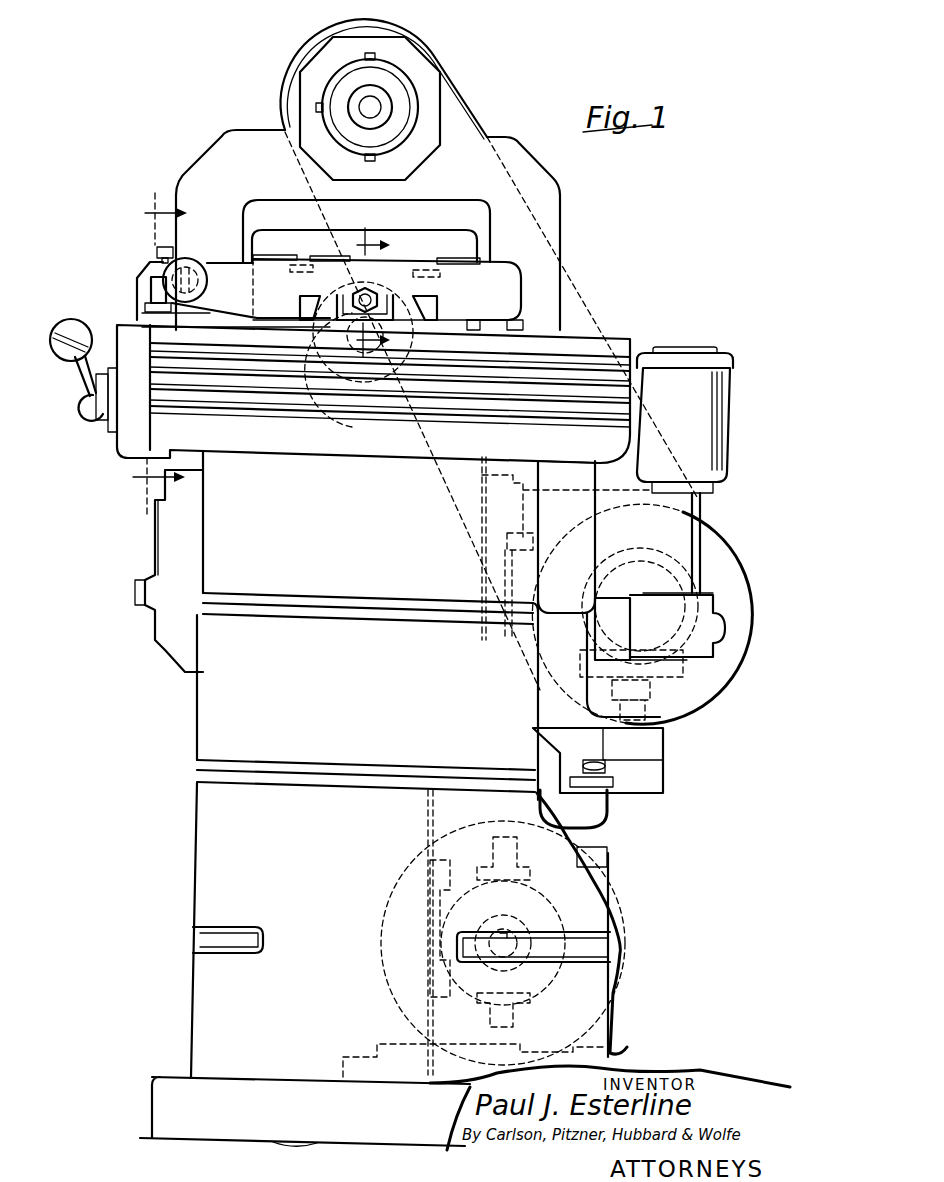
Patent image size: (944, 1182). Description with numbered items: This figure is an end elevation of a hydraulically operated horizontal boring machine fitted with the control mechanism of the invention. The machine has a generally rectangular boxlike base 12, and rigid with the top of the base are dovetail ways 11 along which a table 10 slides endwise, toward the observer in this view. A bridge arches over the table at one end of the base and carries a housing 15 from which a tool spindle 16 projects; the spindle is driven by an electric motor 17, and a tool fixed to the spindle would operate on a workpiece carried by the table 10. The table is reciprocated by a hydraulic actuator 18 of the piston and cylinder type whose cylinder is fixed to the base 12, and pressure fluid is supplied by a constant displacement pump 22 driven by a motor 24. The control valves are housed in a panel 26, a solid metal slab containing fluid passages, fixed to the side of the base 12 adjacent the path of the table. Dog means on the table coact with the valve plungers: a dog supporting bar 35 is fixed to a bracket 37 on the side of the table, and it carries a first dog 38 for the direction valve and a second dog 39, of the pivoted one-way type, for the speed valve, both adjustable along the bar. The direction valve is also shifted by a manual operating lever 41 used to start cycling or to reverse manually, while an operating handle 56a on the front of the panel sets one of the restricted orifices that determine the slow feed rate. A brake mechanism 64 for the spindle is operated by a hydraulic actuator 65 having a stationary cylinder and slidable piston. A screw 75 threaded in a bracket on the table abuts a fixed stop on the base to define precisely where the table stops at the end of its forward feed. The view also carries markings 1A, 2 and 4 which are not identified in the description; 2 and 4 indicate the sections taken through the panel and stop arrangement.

The head housing 1A is at (560, 195).
The section line of FIG. 2 is at (149, 354).
The section line of FIG. 4 is at (383, 292).
The table 10 is at (507, 273).
The dovetail ways 11 is at (299, 299).
The base 12 is at (203, 844).
The housing 15 is at (440, 82).
The tool spindle 16 is at (385, 82).
The electric motor 17 is at (735, 566).
The hydraulic actuator 18 is at (318, 368).
The constant displacement pump 22 is at (553, 977).
The motor 24 is at (620, 918).
The panel 26 is at (121, 330).
The dog supporting bar 35 is at (201, 277).
The bracket 37 is at (188, 259).
The first dog 38 is at (152, 301).
The second dog 39 is at (150, 292).
The manual operating lever 41 is at (71, 322).
The operating handle 56a is at (89, 416).
The brake mechanism 64 is at (700, 676).
The hydraulic actuator 65 is at (670, 754).
The screw 75 is at (380, 293).